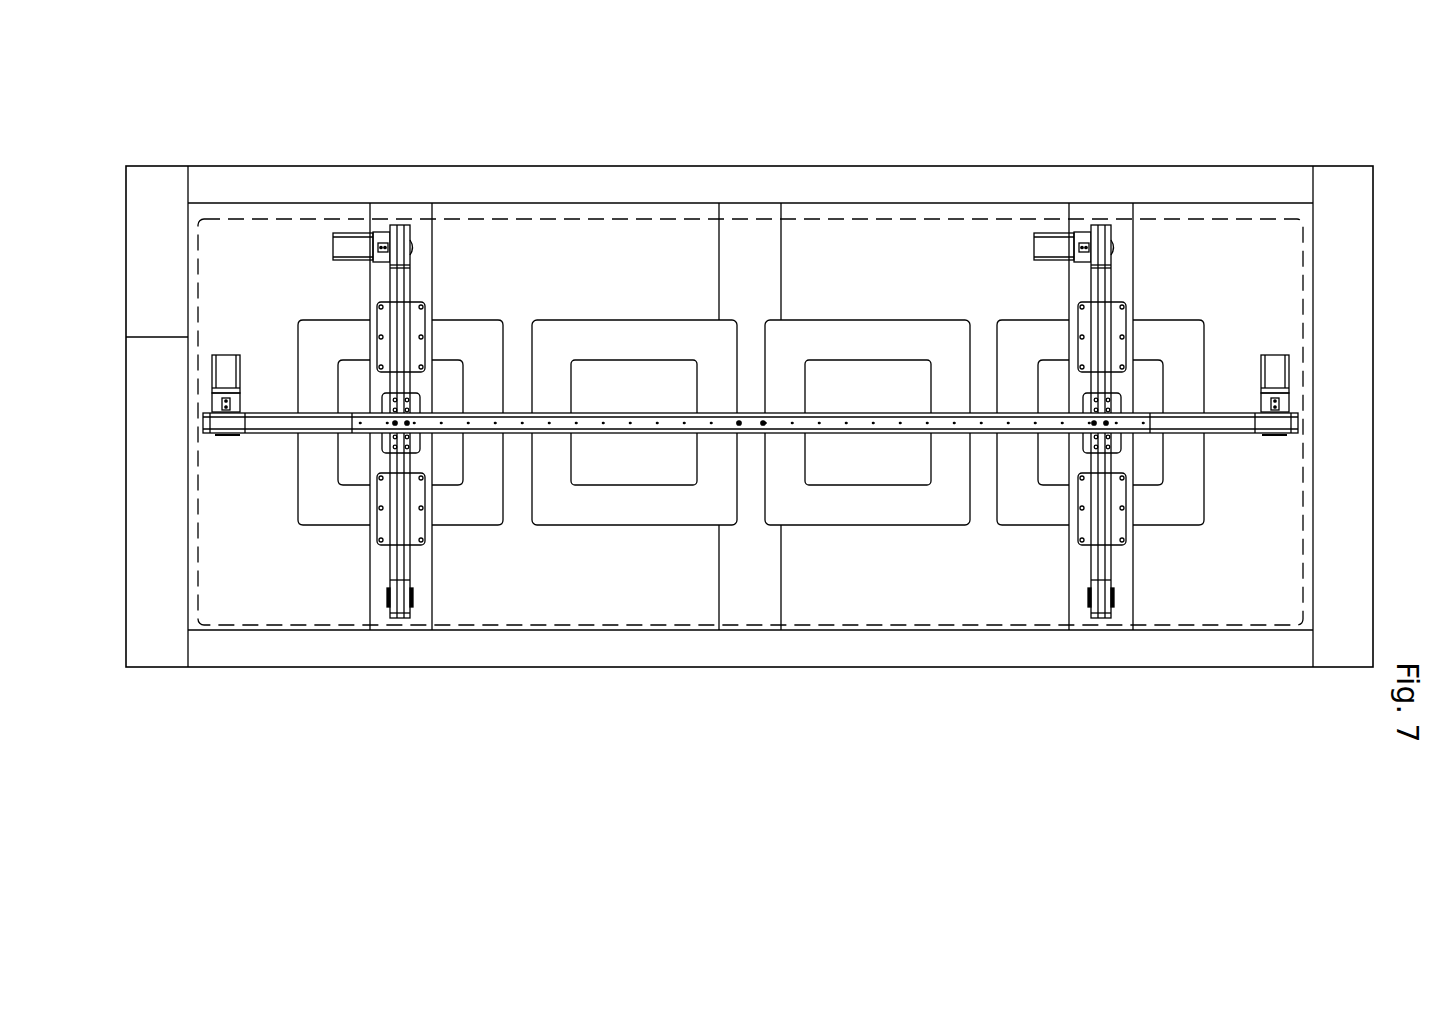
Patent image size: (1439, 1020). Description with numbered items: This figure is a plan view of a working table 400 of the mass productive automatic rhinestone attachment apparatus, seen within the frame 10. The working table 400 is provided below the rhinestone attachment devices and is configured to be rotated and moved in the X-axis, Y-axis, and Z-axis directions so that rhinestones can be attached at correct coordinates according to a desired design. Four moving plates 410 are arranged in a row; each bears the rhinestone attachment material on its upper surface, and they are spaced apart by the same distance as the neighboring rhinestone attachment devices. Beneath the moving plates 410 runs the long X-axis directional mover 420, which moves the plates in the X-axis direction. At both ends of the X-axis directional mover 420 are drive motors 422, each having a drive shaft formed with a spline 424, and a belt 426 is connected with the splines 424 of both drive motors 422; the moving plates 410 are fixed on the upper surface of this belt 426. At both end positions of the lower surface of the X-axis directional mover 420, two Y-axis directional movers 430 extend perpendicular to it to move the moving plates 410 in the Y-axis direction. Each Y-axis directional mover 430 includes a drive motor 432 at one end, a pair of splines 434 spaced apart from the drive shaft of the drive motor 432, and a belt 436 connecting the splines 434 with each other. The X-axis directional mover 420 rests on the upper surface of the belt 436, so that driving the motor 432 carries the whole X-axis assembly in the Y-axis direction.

The frame 10 is at (1163, 178).
The working table 400 is at (719, 425).
The moving plates 410 is at (573, 517).
The X-axis directional mover 420 is at (270, 455).
The drive motors 422 is at (227, 362).
The spline 424 is at (225, 435).
The belt 426 is at (325, 423).
The Y-axis directional movers 430 is at (419, 405).
The drive motor 432 is at (357, 240).
The splines 434 is at (400, 247).
The belt 436 is at (402, 283).